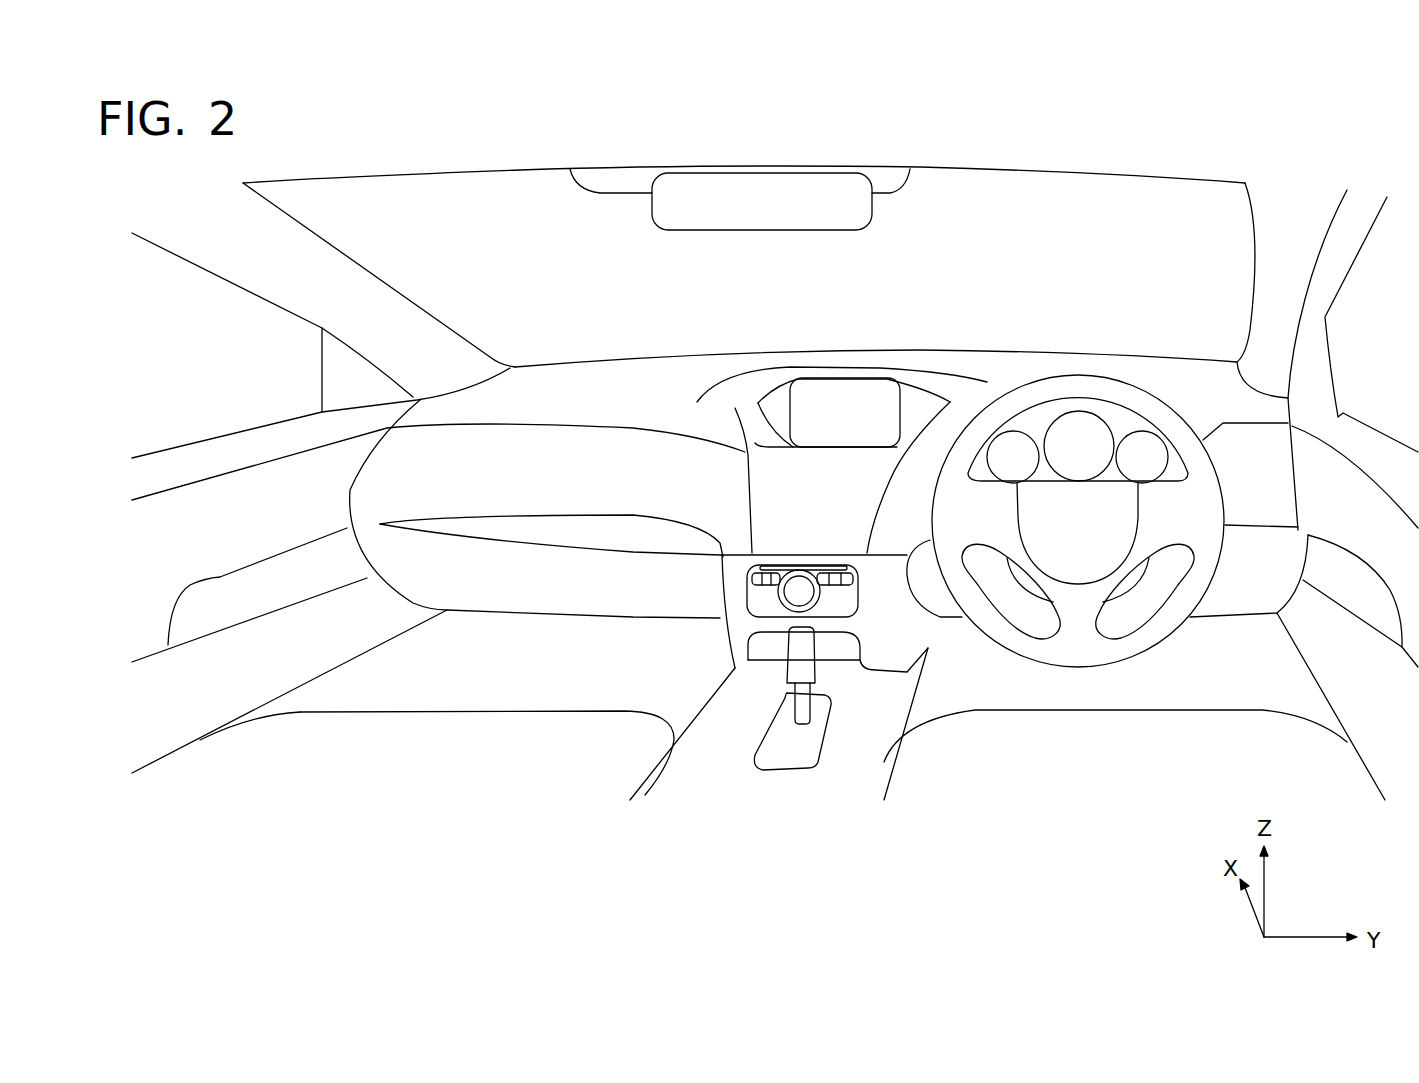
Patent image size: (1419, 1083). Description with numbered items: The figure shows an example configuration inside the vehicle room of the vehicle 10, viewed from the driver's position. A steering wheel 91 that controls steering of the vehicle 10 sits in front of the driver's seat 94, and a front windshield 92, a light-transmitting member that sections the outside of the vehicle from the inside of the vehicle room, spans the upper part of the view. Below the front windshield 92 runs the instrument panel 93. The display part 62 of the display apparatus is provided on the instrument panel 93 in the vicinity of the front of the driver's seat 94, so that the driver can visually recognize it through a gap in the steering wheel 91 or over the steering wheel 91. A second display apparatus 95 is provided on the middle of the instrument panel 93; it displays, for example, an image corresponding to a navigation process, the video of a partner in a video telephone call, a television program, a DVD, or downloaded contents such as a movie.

The vehicle 10 is at (668, 675).
The display part 62 is at (1080, 437).
The steering wheel 91 is at (1078, 496).
The front windshield 92 is at (858, 300).
The instrument panel 93 is at (690, 389).
The driver's seat 94 is at (1141, 781).
The second display apparatus 95 is at (861, 427).